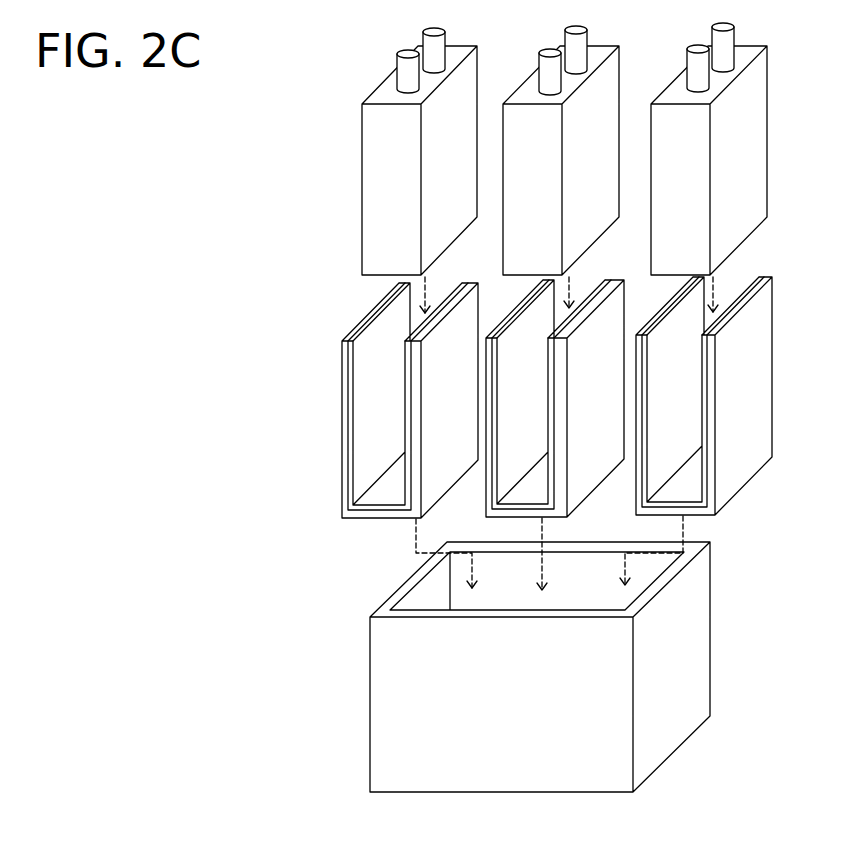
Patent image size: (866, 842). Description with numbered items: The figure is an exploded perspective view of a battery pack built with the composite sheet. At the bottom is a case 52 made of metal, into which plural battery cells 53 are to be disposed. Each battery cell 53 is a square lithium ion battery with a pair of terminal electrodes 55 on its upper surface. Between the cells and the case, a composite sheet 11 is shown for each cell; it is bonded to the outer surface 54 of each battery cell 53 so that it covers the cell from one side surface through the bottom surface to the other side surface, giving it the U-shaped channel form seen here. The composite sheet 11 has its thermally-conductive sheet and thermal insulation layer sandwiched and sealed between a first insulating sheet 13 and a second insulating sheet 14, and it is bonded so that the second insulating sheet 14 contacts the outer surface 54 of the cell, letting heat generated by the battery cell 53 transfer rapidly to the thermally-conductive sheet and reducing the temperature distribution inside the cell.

The composite sheet 11 is at (564, 397).
The first insulating sheet 13 is at (762, 427).
The second insulating sheet 14 is at (370, 435).
The case 52 is at (686, 653).
The battery cell 53 is at (566, 149).
The outer surface 54 is at (605, 208).
The terminal electrode 55 is at (405, 68).